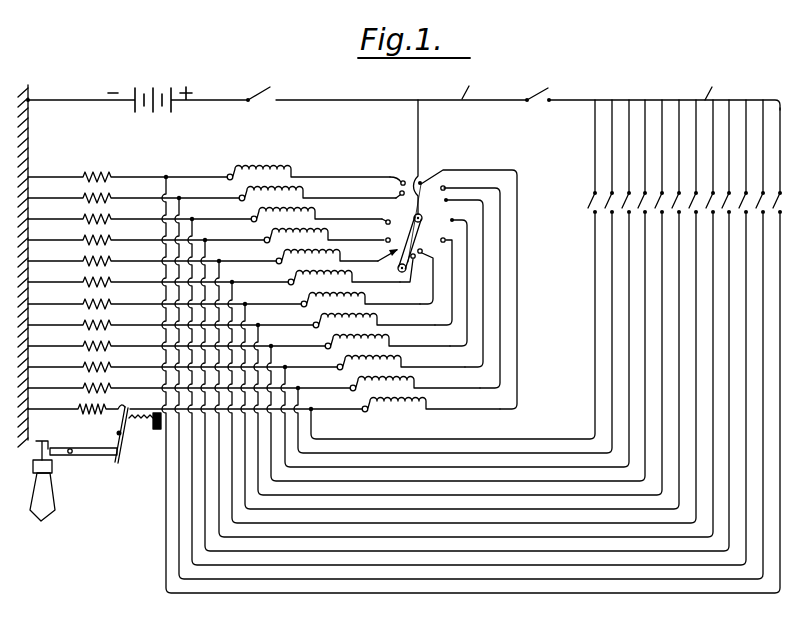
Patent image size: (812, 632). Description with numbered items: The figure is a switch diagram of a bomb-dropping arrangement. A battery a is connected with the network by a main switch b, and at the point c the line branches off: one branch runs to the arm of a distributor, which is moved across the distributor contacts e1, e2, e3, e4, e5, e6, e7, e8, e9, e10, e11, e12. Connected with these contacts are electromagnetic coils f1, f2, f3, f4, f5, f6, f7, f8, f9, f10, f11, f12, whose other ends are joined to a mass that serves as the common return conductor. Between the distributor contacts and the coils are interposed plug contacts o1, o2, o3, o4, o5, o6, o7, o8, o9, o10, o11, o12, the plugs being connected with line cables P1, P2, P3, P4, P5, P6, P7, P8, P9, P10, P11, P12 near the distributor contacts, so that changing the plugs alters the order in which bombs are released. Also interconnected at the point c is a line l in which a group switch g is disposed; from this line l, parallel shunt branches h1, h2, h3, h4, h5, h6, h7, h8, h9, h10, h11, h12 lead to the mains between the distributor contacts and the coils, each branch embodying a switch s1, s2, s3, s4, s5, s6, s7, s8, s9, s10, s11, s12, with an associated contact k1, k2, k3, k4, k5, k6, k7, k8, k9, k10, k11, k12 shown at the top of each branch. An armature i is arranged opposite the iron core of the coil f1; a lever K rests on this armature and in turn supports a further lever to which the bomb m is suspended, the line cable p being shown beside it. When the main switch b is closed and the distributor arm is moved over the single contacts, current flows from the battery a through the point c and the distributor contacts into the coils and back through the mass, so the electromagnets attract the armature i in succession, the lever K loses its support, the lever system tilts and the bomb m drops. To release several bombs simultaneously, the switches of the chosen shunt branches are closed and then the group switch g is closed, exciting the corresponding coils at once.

The battery a is at (170, 90).
The switch b is at (272, 88).
The point c is at (421, 146).
The switch g is at (652, 89).
The line l is at (588, 84).
The armature i is at (138, 438).
The lever K is at (92, 457).
The line cable p is at (50, 450).
The bomb m is at (46, 513).
The electromagnetic coil f1 is at (195, 403).
The electromagnetic coil f2 is at (189, 382).
The electromagnetic coil f3 is at (182, 361).
The electromagnetic coil f4 is at (176, 340).
The electromagnetic coil f5 is at (170, 319).
The electromagnetic coil f6 is at (164, 298).
The electromagnetic coil f7 is at (158, 276).
The electromagnetic coil f8 is at (152, 255).
The electromagnetic coil f9 is at (146, 234).
The electromagnetic coil f10 is at (139, 213).
The electromagnetic coil f11 is at (133, 192).
The electromagnetic coil f12 is at (127, 171).
The plug contact o1 is at (357, 419).
The plug contact o2 is at (345, 397).
The plug contact o3 is at (332, 376).
The plug contact o4 is at (320, 355).
The plug contact o5 is at (308, 334).
The plug contact o6 is at (296, 313).
The plug contact o7 is at (283, 291).
The plug contact o8 is at (271, 270).
The plug contact o9 is at (259, 249).
The plug contact o10 is at (245, 228).
The plug contact o11 is at (233, 207).
The plug contact o12 is at (221, 186).
The line cable P1 is at (428, 404).
The line cable P2 is at (416, 383).
The line cable P3 is at (403, 362).
The line cable P4 is at (391, 341).
The line cable P5 is at (379, 320).
The line cable P6 is at (367, 299).
The line cable P7 is at (354, 277).
The line cable P8 is at (342, 256).
The line cable P9 is at (330, 235).
The line cable P10 is at (317, 214).
The line cable P11 is at (305, 193).
The line cable P12 is at (293, 172).
The distributor contact e1 is at (467, 288).
The distributor contact e2 is at (470, 287).
The distributor contact e3 is at (463, 282).
The distributor contact e4 is at (459, 282).
The distributor contact e5 is at (440, 275).
The distributor contact e6 is at (427, 276).
The distributor contact e7 is at (406, 277).
The distributor contact e8 is at (386, 252).
The distributor contact e9 is at (379, 233).
The distributor contact e10 is at (378, 213).
The distributor contact e11 is at (392, 193).
The distributor contact e12 is at (395, 173).
The shunt branch h1 is at (378, 441).
The shunt branch h2 is at (378, 455).
The shunt branch h3 is at (378, 469).
The shunt branch h4 is at (378, 483).
The shunt branch h5 is at (378, 497).
The shunt branch h6 is at (378, 511).
The shunt branch h7 is at (378, 525).
The shunt branch h8 is at (378, 539).
The shunt branch h9 is at (378, 553).
The shunt branch h10 is at (378, 567).
The shunt branch h11 is at (378, 581).
The shunt branch h12 is at (378, 595).
The switch blade k1 is at (590, 154).
The switch blade k2 is at (607, 154).
The switch blade k3 is at (624, 154).
The switch blade k4 is at (640, 154).
The switch blade k5 is at (657, 154).
The switch blade k6 is at (674, 154).
The switch blade k7 is at (691, 154).
The switch blade k8 is at (708, 154).
The switch blade k9 is at (724, 154).
The switch blade k10 is at (742, 154).
The switch blade k11 is at (759, 154).
The switch blade k12 is at (776, 158).
The switch s1 is at (590, 222).
The switch s2 is at (607, 222).
The switch s3 is at (624, 222).
The switch s4 is at (640, 222).
The switch s5 is at (657, 222).
The switch s6 is at (674, 222).
The switch s7 is at (691, 222).
The switch s8 is at (708, 222).
The switch s9 is at (724, 222).
The switch s10 is at (741, 222).
The switch s11 is at (758, 222).
The switch s12 is at (775, 222).